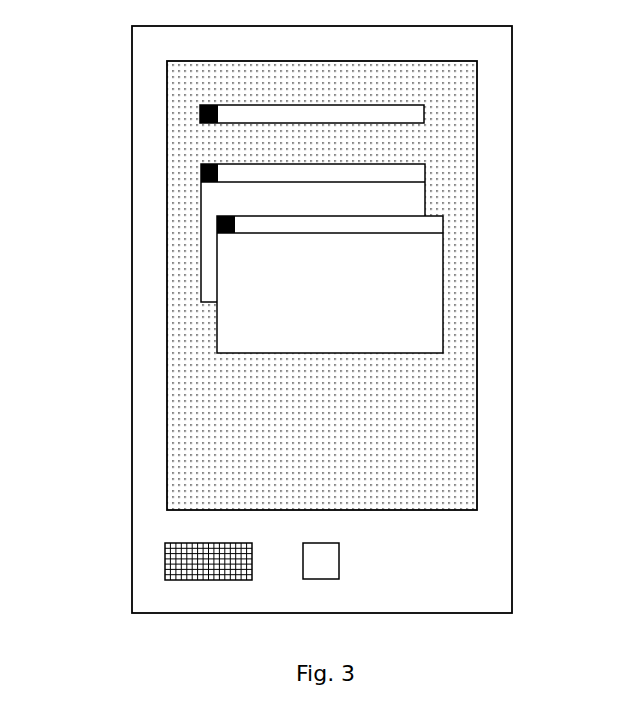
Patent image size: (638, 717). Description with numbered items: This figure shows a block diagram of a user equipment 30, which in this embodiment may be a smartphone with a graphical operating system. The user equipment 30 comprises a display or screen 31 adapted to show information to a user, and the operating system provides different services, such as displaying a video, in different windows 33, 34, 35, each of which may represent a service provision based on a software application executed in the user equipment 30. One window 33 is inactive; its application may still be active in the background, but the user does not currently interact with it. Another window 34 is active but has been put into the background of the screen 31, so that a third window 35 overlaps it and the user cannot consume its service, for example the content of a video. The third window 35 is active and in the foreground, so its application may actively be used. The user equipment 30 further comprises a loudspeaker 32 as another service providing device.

The user equipment 30 is at (512, 128).
The display or screen 31 is at (443, 422).
The loudspeaker 32 is at (183, 562).
The inactive window 33 is at (232, 115).
The active background window 34 is at (235, 199).
The active foreground window 35 is at (235, 285).